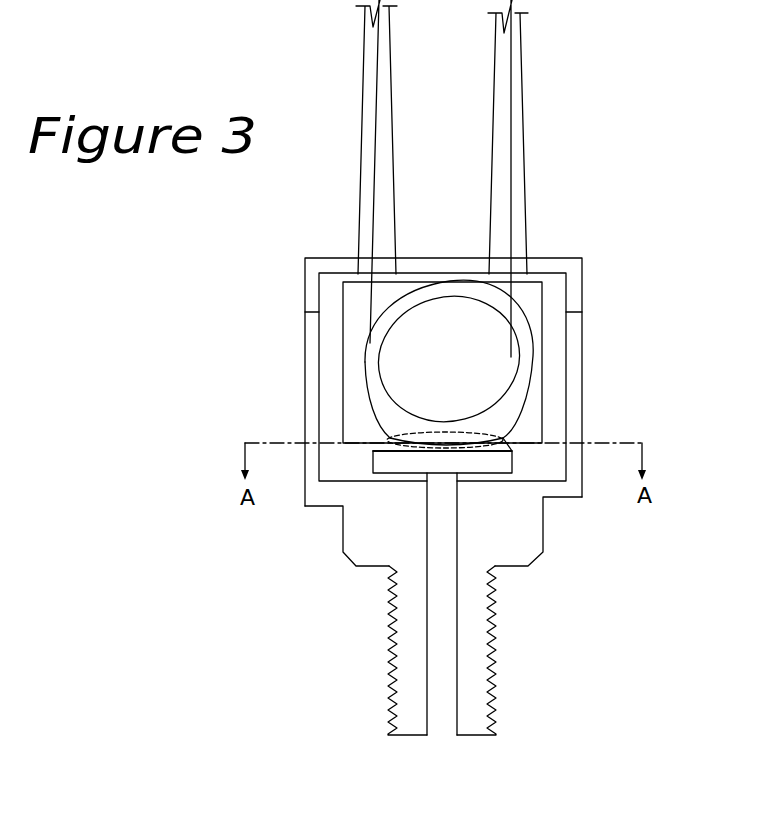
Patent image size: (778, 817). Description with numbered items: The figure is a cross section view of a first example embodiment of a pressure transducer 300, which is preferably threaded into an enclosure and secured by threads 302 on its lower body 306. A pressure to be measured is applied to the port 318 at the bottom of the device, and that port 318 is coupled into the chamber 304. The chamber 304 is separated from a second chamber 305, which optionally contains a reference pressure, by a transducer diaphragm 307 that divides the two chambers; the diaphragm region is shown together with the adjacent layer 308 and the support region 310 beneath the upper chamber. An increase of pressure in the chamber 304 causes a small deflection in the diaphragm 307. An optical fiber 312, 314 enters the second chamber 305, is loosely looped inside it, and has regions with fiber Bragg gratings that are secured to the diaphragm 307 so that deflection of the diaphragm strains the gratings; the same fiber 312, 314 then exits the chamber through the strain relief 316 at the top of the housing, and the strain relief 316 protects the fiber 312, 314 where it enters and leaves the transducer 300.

The pressure transducer 300 is at (200, 221).
The threads 302 is at (490, 668).
The chamber 304 is at (491, 462).
The second chamber 305 is at (357, 401).
The housing body 306 is at (382, 553).
The transducer diaphragm 307 is at (376, 447).
The seal layer 308 is at (397, 436).
The support 310 is at (507, 438).
The optical fiber 312 is at (513, 293).
The optical fiber 314 is at (368, 295).
The strain relief 316 is at (393, 185).
The port 318 is at (445, 735).